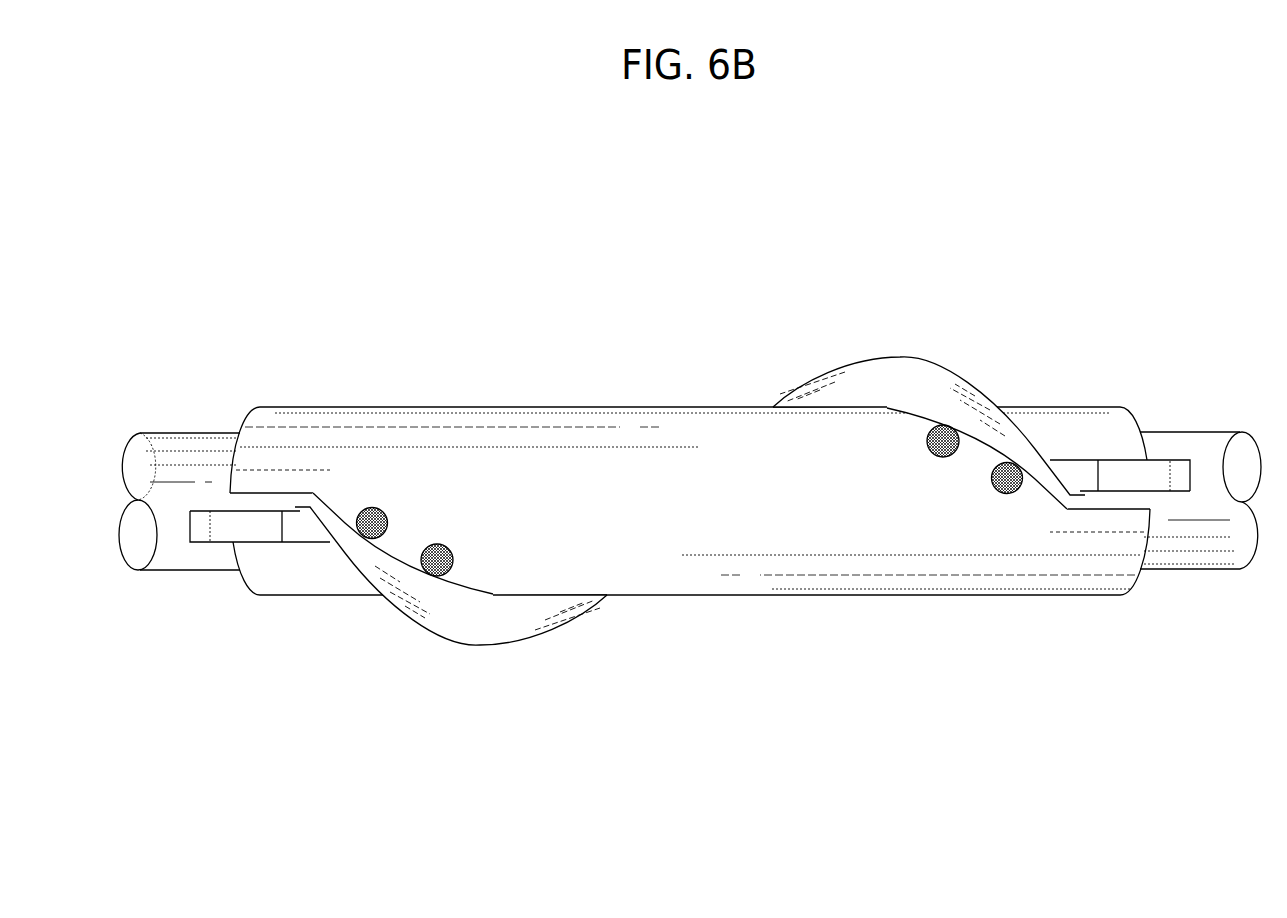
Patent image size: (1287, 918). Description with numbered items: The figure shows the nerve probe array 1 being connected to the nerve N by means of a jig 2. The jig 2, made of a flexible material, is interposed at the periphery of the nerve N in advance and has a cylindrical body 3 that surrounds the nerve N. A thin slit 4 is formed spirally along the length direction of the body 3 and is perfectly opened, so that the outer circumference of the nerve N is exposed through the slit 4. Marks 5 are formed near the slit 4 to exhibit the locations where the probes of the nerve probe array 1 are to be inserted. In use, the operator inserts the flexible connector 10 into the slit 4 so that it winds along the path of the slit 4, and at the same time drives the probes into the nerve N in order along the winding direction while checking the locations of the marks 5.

The nerve N is at (185, 452).
The nerve probe array 1 is at (490, 622).
The jig 2 is at (505, 423).
The cylindrical body 3 is at (653, 437).
The slit 4 is at (340, 492).
The mark 5 is at (382, 507).
The connector 10 is at (397, 610).